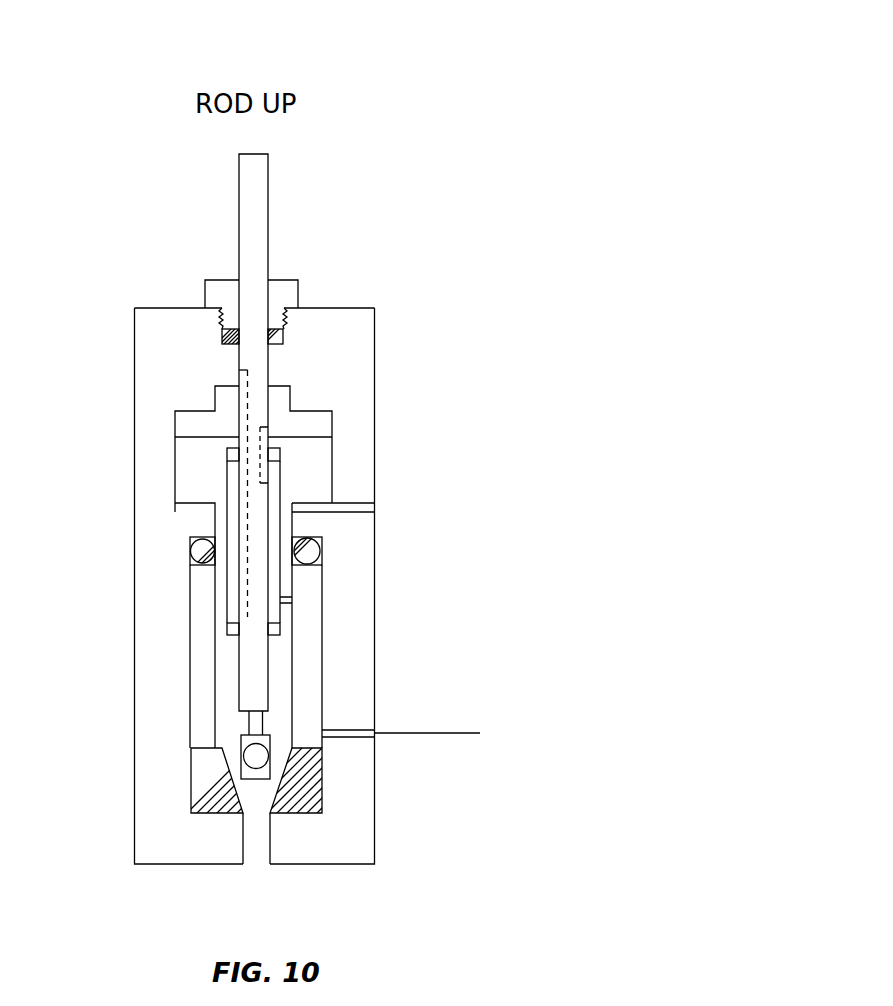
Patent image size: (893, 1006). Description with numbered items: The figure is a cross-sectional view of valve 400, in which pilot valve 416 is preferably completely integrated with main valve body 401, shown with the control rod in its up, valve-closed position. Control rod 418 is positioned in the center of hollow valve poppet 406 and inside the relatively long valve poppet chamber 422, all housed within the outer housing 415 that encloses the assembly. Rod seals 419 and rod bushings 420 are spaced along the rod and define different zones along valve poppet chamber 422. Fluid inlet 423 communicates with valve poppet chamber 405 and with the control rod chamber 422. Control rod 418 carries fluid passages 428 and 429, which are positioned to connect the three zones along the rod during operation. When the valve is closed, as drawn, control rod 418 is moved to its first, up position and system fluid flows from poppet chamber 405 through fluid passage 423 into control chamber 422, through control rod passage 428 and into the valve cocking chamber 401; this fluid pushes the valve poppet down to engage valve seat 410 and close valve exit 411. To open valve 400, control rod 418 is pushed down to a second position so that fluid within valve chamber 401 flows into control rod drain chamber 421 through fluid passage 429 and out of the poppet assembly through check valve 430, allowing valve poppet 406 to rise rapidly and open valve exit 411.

The valve 400 is at (466, 96).
The main valve body 401 is at (331, 418).
The valve poppet chamber 405 is at (307, 687).
The hollow valve poppet 406 is at (285, 585).
The valve seat 410 is at (321, 788).
The valve exit 411 is at (257, 864).
The housing 415 is at (373, 505).
The pilot valve 416 is at (283, 290).
The control rod 418 is at (247, 178).
The rod seals 419 is at (224, 337).
The rod bushings 420 is at (238, 495).
The control rod drain chamber 421 is at (255, 682).
The valve poppet chamber 422 is at (281, 526).
The fluid inlet 423 is at (290, 597).
The control rod passage 428 is at (262, 440).
The fluid passage 429 is at (250, 581).
The check valve 430 is at (252, 752).